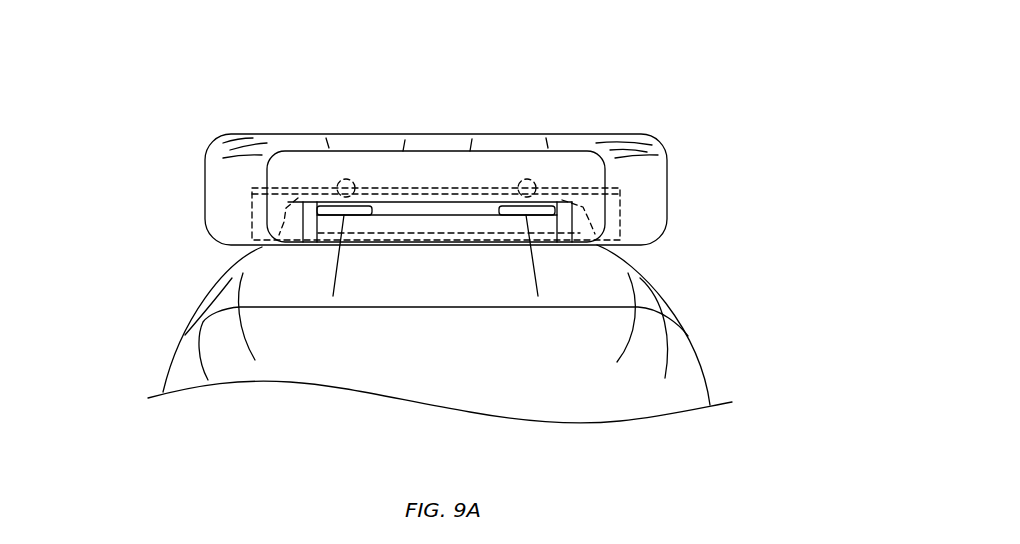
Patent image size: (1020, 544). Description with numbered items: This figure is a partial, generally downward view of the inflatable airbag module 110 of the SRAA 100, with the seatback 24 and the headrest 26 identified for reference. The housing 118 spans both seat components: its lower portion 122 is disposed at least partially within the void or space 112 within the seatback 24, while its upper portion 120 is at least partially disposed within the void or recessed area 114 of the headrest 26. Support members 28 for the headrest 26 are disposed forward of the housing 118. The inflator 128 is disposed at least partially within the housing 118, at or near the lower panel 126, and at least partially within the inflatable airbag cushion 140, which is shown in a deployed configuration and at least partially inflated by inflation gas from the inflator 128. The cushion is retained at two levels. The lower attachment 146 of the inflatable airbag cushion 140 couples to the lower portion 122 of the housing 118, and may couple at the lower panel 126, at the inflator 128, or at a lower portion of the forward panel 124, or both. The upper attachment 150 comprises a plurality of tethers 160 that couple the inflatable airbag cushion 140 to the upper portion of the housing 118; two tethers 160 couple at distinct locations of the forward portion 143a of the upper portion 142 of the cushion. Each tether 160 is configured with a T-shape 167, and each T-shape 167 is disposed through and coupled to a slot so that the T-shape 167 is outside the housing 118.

The SRAA 100 is at (190, 83).
The upper attachment 150 is at (190, 160).
The inflatable airbag module 110 is at (155, 270).
The seatback 24 is at (668, 172).
The headrest 26 is at (572, 152).
The void or space 112 is at (305, 197).
The lower attachment 146 is at (427, 195).
The support members 28 is at (350, 180).
The inflator 128 is at (298, 198).
The lower portion 122 is at (562, 200).
The housing 118 is at (493, 207).
The forward panel 124 is at (455, 210).
The upper portion 120 is at (303, 226).
The void or recessed area 114 is at (570, 219).
The T-shape 167 is at (358, 215).
The tethers 160 is at (332, 258).
The lower panel 126 is at (450, 248).
The inflatable airbag cushion 140 is at (467, 383).
The upper portion 142 is at (418, 300).
The forward portion 143a is at (562, 297).